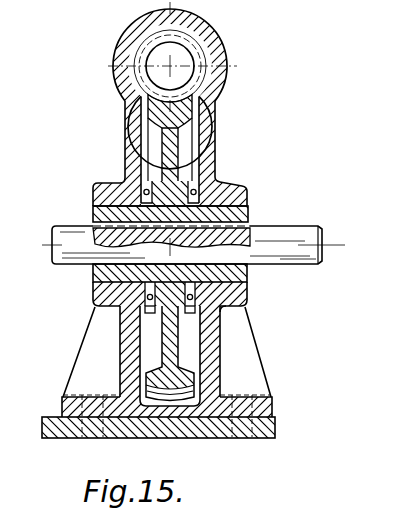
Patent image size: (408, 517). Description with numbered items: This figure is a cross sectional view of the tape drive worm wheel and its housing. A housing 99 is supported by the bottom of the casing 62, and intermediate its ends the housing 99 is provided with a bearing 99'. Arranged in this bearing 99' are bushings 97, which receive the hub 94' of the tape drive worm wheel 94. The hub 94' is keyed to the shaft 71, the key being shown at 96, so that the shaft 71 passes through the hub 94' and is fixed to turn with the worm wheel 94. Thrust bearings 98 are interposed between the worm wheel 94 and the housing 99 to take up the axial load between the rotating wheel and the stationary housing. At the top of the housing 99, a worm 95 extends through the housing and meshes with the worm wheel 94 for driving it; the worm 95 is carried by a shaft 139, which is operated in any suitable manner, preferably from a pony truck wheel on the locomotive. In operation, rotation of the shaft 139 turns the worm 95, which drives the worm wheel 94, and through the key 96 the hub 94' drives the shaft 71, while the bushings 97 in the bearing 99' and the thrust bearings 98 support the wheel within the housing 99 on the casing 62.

The shaft 139 is at (186, 51).
The housing 99 is at (170, 231).
The worm 95 is at (227, 82).
The tape drive worm wheel 94 is at (203, 248).
The bearing 99' is at (182, 182).
The thrust bearings 98 is at (142, 190).
The hub 94' is at (147, 207).
The key 96 is at (252, 220).
The shaft 71 is at (293, 258).
The bushings 97 is at (245, 286).
The casing 62 is at (275, 438).